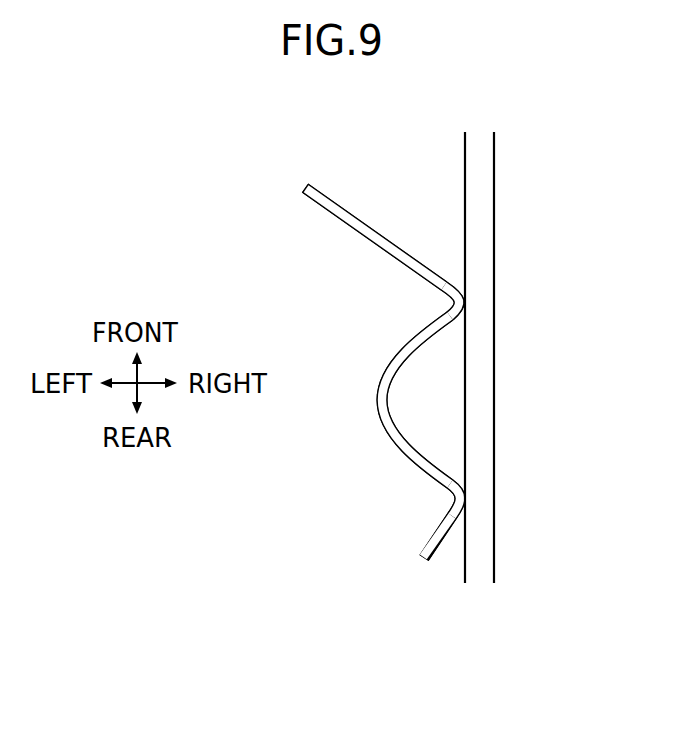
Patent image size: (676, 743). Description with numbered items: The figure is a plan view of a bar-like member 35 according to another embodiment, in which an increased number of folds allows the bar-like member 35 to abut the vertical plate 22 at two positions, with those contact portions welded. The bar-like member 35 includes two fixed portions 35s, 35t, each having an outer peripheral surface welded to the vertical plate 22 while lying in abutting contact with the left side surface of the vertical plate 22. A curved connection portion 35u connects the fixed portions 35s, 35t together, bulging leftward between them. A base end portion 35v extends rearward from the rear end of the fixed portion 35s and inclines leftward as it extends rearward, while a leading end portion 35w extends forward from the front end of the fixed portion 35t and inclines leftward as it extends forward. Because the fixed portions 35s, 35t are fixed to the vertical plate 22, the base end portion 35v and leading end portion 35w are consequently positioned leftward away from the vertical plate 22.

The vertical plate 22 is at (491, 399).
The bar-like member 35 is at (367, 400).
The leading end portion 35w is at (375, 229).
The fixed portion 35t is at (453, 296).
The curved connection portion 35u is at (387, 437).
The fixed portion 35s is at (453, 501).
The base end portion 35v is at (436, 548).